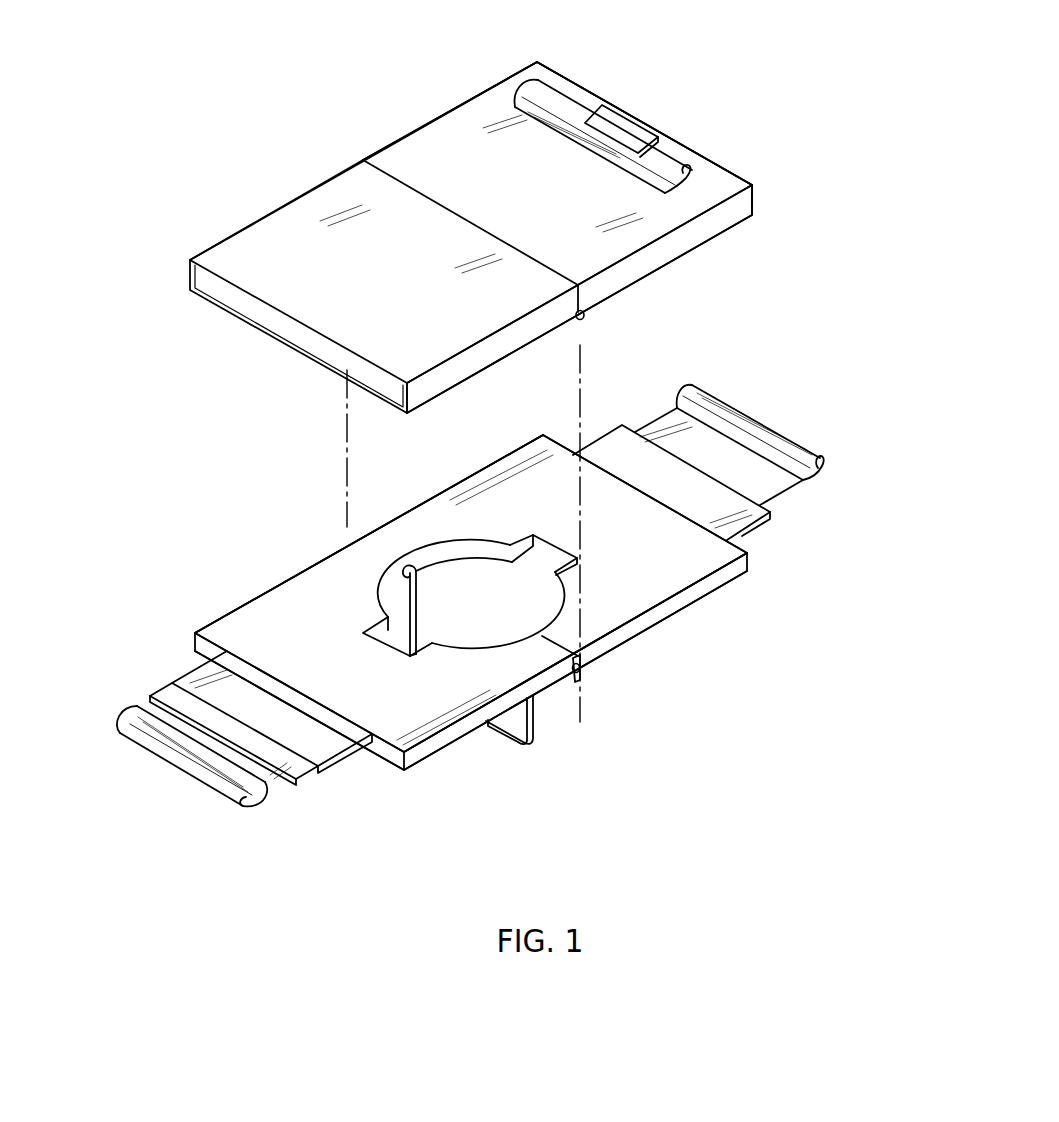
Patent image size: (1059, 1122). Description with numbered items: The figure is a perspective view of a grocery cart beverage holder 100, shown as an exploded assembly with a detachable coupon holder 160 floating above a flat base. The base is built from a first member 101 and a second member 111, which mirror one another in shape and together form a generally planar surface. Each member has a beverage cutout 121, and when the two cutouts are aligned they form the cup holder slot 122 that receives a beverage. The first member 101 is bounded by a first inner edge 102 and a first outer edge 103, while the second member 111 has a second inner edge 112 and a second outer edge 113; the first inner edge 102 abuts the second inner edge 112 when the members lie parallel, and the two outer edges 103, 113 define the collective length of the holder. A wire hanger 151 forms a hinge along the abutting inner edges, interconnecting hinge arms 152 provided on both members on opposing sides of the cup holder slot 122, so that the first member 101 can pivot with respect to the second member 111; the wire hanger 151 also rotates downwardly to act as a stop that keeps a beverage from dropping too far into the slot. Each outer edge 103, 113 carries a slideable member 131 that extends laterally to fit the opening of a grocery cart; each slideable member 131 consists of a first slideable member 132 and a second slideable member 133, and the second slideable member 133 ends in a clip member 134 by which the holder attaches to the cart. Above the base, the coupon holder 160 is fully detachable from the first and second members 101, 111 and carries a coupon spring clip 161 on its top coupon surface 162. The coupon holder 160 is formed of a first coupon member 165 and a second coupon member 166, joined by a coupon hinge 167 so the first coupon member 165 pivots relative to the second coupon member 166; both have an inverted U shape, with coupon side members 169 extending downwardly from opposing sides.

The grocery cart beverage holder 100 is at (191, 186).
The first member 101 is at (323, 549).
The first inner edge 102 is at (545, 637).
The first outer edge 103 is at (391, 760).
The second member 111 is at (445, 481).
The second inner edge 112 is at (592, 638).
The second outer edge 113 is at (546, 436).
The beverage cutout 121 is at (468, 538).
The cup holder slot 122 is at (443, 588).
The slideable member 131 is at (190, 632).
The first slideable member 132 is at (345, 740).
The second slideable member 133 is at (290, 769).
The clip member 134 is at (208, 779).
The wire hanger 151 is at (491, 731).
The hinge arm 152 is at (584, 672).
The coupon holder 160 is at (585, 14).
The coupon spring clip 161 is at (578, 104).
The top coupon surface 162 is at (460, 125).
The first coupon member 165 is at (383, 148).
The second coupon member 166 is at (277, 210).
The coupon hinge 167 is at (587, 314).
The coupon side member 169 is at (672, 250).